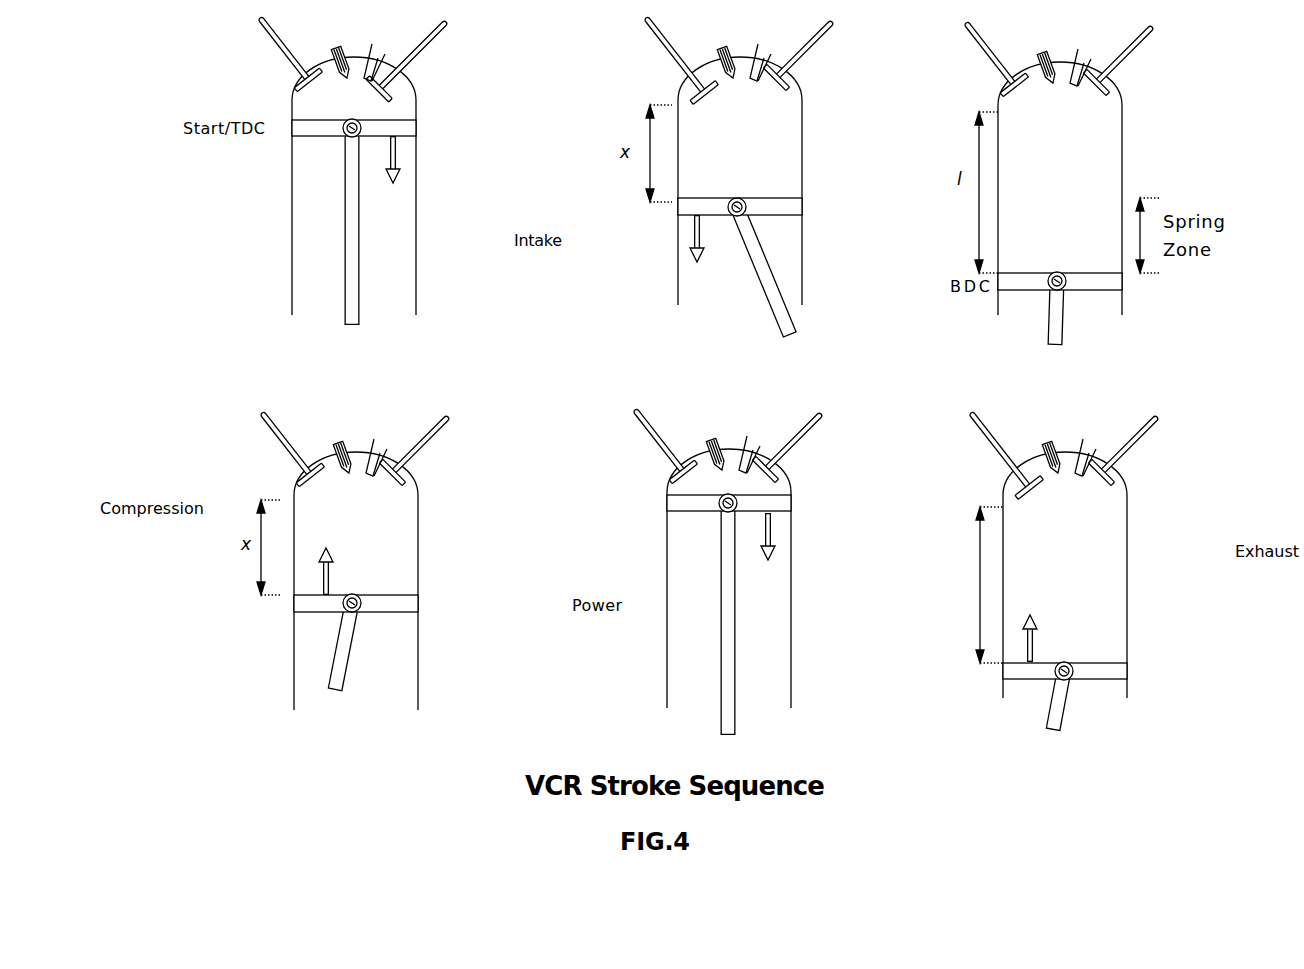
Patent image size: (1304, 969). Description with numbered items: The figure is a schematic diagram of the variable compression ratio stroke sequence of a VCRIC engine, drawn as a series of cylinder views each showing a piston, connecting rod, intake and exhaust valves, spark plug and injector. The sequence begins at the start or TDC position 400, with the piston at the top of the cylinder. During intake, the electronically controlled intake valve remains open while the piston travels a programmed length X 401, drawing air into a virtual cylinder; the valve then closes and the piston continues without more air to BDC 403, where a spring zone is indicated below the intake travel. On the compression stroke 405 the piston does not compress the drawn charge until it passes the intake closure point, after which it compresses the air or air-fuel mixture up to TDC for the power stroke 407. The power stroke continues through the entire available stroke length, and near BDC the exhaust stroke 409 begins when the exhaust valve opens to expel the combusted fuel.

The start/TDC stroke position 400 is at (250, 291).
The intake length X 401 is at (596, 263).
The BDC 403 is at (1196, 80).
The compression stroke 405 is at (225, 630).
The power stroke 407 is at (632, 639).
The full stroke length / exhaust stroke start 409 is at (1160, 582).